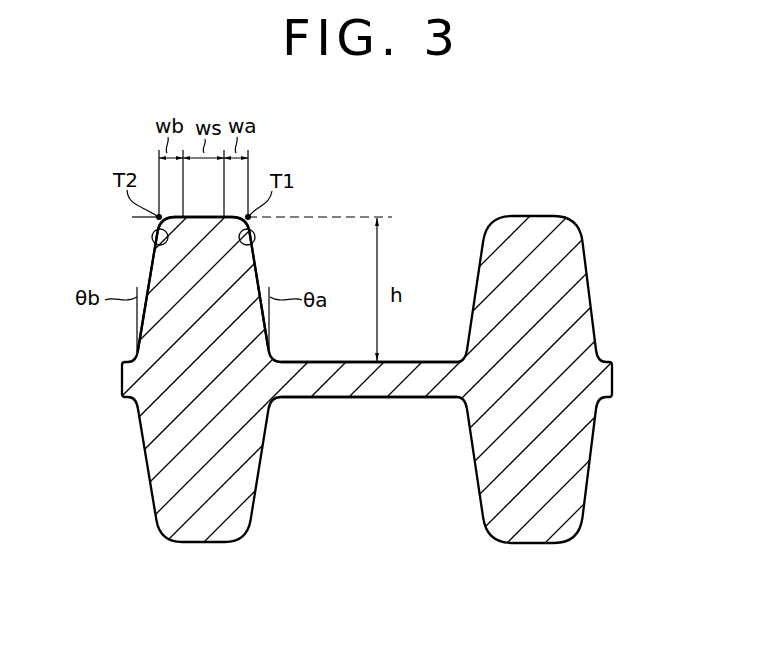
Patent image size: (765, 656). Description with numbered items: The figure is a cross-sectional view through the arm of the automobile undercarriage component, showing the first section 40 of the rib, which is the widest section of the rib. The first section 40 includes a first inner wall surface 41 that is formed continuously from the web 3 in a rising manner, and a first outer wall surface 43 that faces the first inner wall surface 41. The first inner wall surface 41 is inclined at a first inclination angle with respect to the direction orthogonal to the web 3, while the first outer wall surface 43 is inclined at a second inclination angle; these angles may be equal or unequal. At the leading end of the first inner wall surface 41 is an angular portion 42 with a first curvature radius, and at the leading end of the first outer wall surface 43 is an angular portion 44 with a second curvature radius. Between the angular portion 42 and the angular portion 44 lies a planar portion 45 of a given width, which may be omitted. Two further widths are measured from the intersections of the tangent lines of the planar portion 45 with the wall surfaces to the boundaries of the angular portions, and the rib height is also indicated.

The first section 40 is at (336, 170).
The web 3 is at (320, 366).
The planar portion 45 is at (205, 215).
The angular portion 44 is at (152, 237).
The angular portion 42 is at (255, 237).
The first outer wall surface 43 is at (150, 262).
The first inner wall surface 41 is at (257, 262).